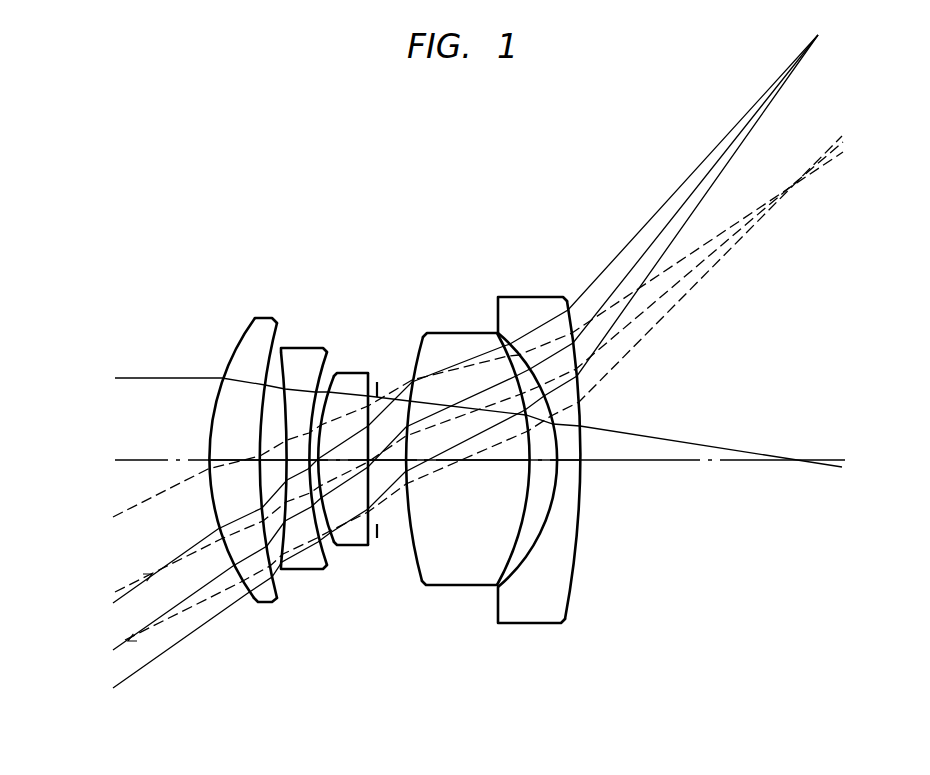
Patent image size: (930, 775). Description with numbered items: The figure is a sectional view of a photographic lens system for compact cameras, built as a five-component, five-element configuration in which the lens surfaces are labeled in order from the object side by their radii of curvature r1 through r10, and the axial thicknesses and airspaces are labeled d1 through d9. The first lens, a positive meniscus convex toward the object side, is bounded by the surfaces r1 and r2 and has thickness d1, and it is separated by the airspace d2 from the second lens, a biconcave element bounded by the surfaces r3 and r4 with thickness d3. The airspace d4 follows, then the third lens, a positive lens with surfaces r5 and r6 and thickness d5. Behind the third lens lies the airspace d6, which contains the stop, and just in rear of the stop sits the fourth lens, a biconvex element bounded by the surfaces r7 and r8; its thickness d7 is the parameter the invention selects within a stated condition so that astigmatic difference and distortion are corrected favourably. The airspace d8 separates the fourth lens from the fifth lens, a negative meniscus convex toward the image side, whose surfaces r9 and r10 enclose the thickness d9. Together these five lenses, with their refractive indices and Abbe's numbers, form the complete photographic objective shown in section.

The radius of curvature of first lens surface r1 is at (248, 318).
The radius of curvature of second lens surface r2 is at (271, 340).
The radius of curvature of third lens surface r3 is at (284, 362).
The radius of curvature of fourth lens surface r4 is at (324, 367).
The radius of curvature of fifth lens surface r5 is at (338, 374).
The radius of curvature of sixth lens surface r6 is at (369, 374).
The radius of curvature of seventh lens surface r7 is at (422, 333).
The radius of curvature of eighth lens surface r8 is at (497, 337).
The radius of curvature of ninth lens surface r9 is at (500, 333).
The radius of curvature of tenth lens surface r10 is at (567, 297).
The thickness of first lens d1 is at (224, 460).
The airspace between first and second lenses d2 is at (270, 462).
The thickness of second lens d3 is at (294, 460).
The airspace between second and third lenses d4 is at (313, 462).
The thickness of third lens d5 is at (350, 462).
The airspace between third and fourth lenses d6 is at (390, 462).
The thickness of fourth lens d7 is at (490, 462).
The airspace between fourth and fifth lenses d8 is at (556, 463).
The thickness of fifth lens d9 is at (571, 464).